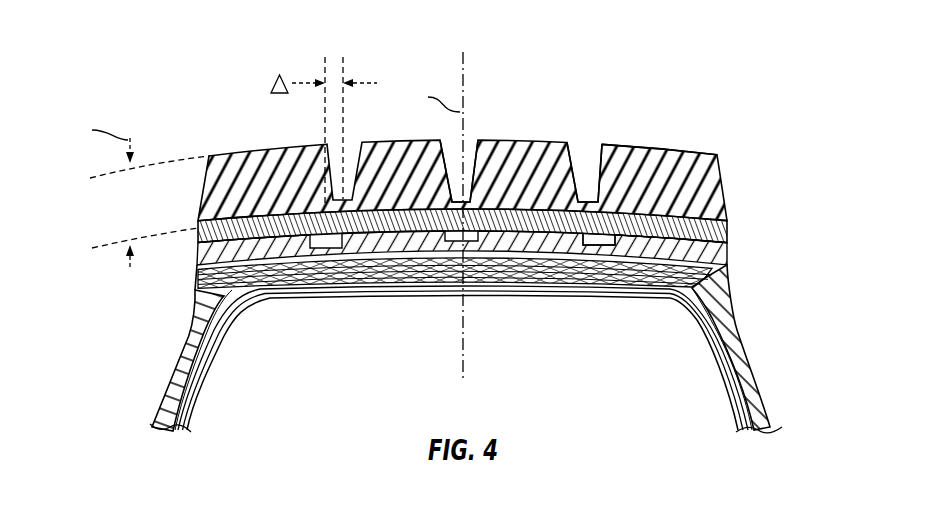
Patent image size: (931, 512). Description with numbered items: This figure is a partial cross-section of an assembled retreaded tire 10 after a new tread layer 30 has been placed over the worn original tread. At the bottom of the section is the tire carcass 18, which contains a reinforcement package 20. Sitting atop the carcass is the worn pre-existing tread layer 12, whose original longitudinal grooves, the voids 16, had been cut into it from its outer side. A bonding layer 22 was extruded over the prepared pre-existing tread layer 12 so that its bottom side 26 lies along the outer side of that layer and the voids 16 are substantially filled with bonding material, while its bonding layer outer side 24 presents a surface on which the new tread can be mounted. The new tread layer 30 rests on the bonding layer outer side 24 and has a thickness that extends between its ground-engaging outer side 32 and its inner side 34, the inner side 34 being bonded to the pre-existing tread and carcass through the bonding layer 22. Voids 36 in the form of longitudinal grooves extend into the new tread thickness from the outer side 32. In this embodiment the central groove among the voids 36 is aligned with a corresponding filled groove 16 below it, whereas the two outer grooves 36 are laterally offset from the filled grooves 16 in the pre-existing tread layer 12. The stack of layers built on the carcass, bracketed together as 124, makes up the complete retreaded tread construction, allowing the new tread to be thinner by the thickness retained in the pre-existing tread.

The retreaded tire 10 is at (168, 58).
The pre-existing tread layer 12 is at (535, 240).
The voids 16 is at (587, 243).
The tire carcass 18 is at (757, 394).
The reinforcement package 20 is at (703, 292).
The bonding layer 22 is at (263, 233).
The bonding layer outer side 24 is at (488, 205).
The bottom side of bonding layer 26 is at (633, 237).
The new tread layer 30 is at (703, 158).
The outer side 32 is at (638, 147).
The inner side 34 is at (657, 213).
The voids 36 is at (471, 138).
The tread package 124 is at (742, 155).